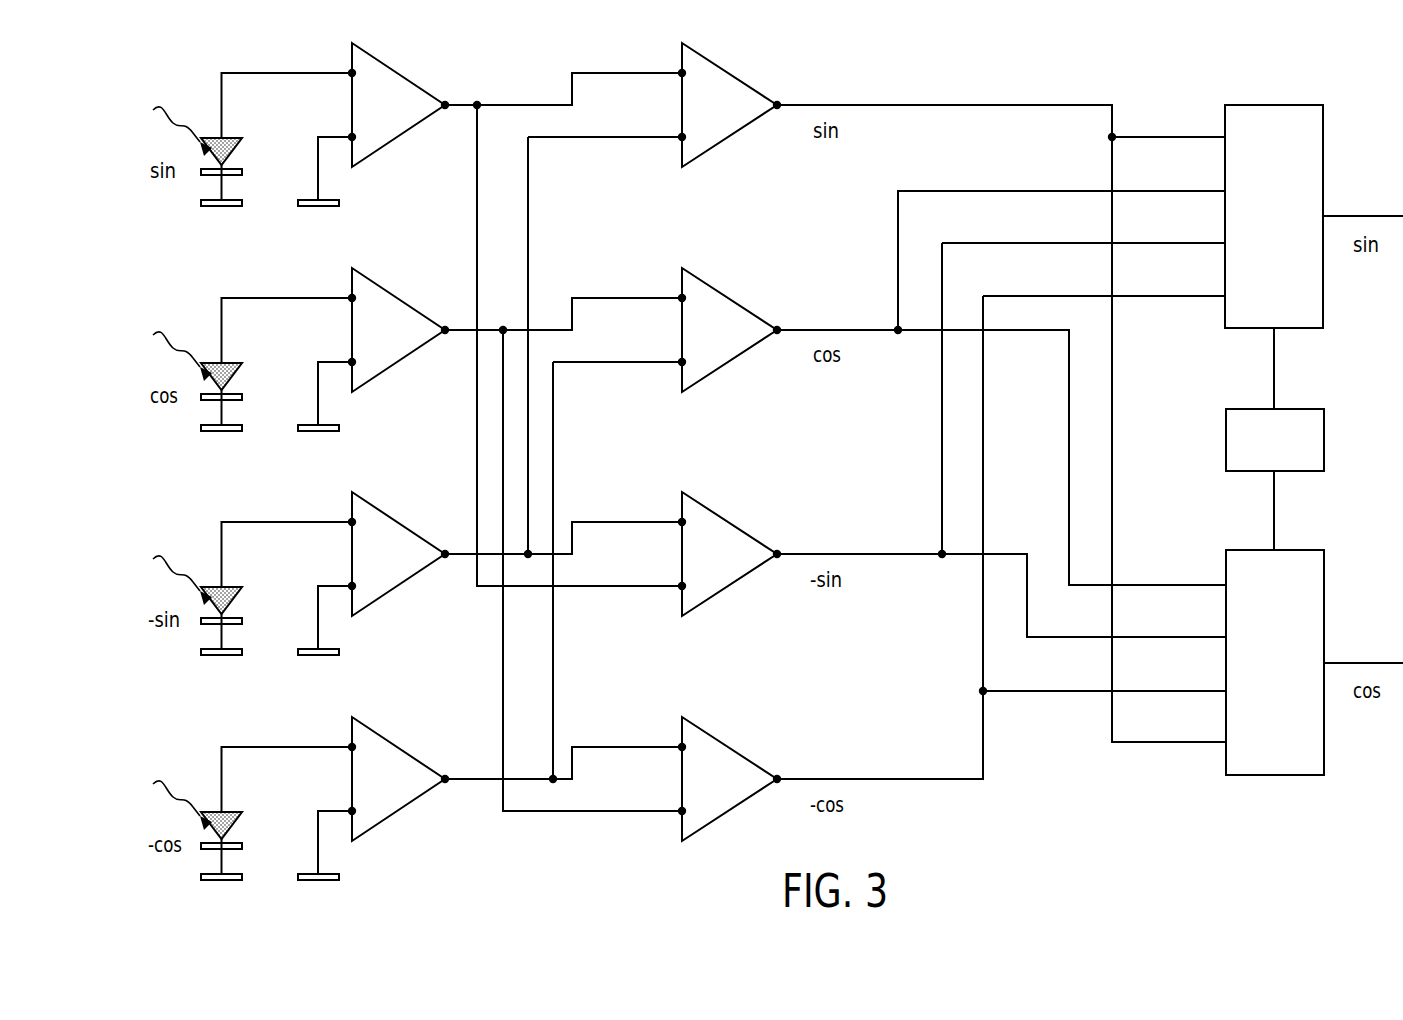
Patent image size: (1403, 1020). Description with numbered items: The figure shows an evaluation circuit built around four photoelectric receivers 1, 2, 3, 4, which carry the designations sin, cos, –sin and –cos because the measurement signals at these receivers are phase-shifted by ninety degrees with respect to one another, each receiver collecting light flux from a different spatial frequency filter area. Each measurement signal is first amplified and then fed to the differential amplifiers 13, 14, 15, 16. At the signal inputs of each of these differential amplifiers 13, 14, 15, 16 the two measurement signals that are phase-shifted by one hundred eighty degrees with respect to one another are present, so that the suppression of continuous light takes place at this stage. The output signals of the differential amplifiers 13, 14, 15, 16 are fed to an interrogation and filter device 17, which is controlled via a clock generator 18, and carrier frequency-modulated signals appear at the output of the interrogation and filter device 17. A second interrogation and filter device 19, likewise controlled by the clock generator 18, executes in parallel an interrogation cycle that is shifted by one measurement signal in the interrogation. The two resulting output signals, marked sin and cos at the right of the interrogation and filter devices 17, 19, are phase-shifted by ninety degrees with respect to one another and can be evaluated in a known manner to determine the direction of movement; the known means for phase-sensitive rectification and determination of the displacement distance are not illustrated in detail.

The photoelectric receiver 1 is at (238, 145).
The photoelectric receiver 2 is at (238, 370).
The photoelectric receiver 3 is at (238, 594).
The photoelectric receiver 4 is at (238, 819).
The differential amplifier 13 is at (723, 83).
The differential amplifier 14 is at (723, 308).
The differential amplifier 15 is at (723, 532).
The differential amplifier 16 is at (723, 757).
The interrogation and filter device 17 is at (1268, 113).
The clock generator 18 is at (1300, 416).
The interrogation and filter device 19 is at (1300, 565).